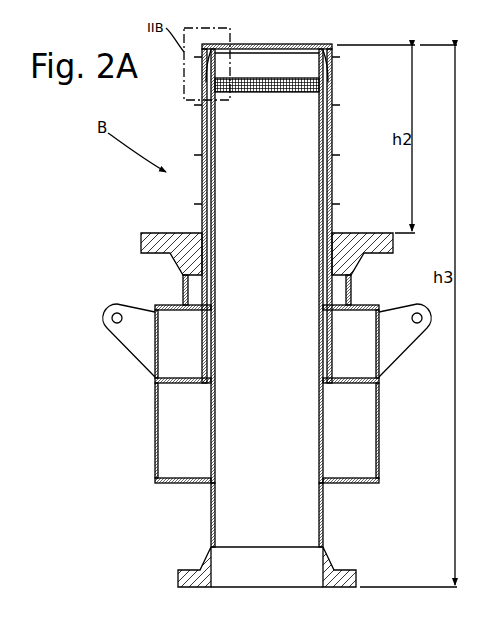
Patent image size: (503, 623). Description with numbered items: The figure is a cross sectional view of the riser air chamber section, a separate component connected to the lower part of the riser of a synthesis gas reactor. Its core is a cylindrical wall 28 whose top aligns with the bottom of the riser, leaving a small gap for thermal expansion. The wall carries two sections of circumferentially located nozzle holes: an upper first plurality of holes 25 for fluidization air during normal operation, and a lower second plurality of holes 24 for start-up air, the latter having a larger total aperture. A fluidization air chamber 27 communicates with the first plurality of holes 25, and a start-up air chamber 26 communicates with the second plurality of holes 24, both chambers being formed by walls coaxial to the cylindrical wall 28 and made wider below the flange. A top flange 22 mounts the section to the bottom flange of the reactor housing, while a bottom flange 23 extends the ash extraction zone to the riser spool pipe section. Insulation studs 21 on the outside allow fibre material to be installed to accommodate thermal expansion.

The insulation studs 21 is at (333, 106).
The top flange 22 is at (147, 240).
The bottom flange 23 is at (343, 577).
The second plurality of holes 24 is at (296, 82).
The first plurality of holes 25 is at (257, 53).
The start-up air chamber 26 is at (357, 435).
The fluidization air chamber 27 is at (363, 347).
The cylindrical wall 28 is at (212, 532).